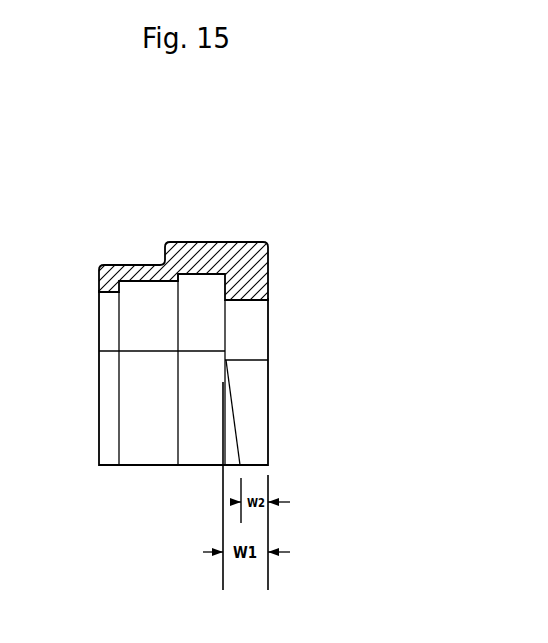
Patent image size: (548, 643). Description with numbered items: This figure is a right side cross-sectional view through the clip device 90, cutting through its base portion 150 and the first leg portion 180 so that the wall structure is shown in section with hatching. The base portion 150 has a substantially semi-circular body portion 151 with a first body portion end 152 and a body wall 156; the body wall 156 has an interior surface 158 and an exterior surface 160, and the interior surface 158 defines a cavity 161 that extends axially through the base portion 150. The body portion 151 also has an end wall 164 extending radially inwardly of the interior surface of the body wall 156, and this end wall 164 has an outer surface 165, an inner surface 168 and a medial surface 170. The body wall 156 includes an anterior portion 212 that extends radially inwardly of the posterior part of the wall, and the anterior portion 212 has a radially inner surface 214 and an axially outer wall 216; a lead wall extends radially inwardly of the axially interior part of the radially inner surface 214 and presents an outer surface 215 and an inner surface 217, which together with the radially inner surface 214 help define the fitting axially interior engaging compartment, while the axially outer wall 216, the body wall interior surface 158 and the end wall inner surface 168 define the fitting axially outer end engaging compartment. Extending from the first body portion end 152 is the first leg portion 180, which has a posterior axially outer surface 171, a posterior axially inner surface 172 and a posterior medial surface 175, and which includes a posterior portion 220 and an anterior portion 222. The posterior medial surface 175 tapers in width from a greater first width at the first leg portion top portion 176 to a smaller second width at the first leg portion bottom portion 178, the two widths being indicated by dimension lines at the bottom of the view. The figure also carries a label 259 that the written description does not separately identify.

The clip device 90 is at (302, 138).
The base portion 150 is at (302, 232).
The body portion 151 is at (183, 215).
The first body portion end 152 is at (328, 313).
The body wall 156 is at (217, 250).
The body wall interior surface 158 is at (192, 274).
The body wall exterior surface 160 is at (240, 242).
The cavity 161 is at (88, 358).
The end wall 164 is at (237, 287).
The end wall outer surface 165 is at (267, 277).
The end wall inner surface 168 is at (225, 294).
The end wall medial surface 170 is at (242, 328).
The posterior axially outer surface 171 is at (270, 445).
The posterior axially inner surface 172 is at (233, 413).
The posterior medial surface 175 is at (250, 427).
The first leg portion top portion 176 is at (268, 361).
The first leg portion bottom portion 178 is at (272, 466).
The first leg portion 180 is at (322, 505).
The body wall anterior portion 212 is at (135, 265).
The body wall anterior portion radially inner surface 214 is at (158, 285).
The lead wall outer surface 215 is at (98, 270).
The axially outer wall 216 is at (162, 262).
The lead wall inner surface 217 is at (120, 292).
The first leg portion posterior portion 220 is at (348, 399).
The first leg portion anterior portion 222 is at (160, 453).
The channel 259 is at (165, 636).